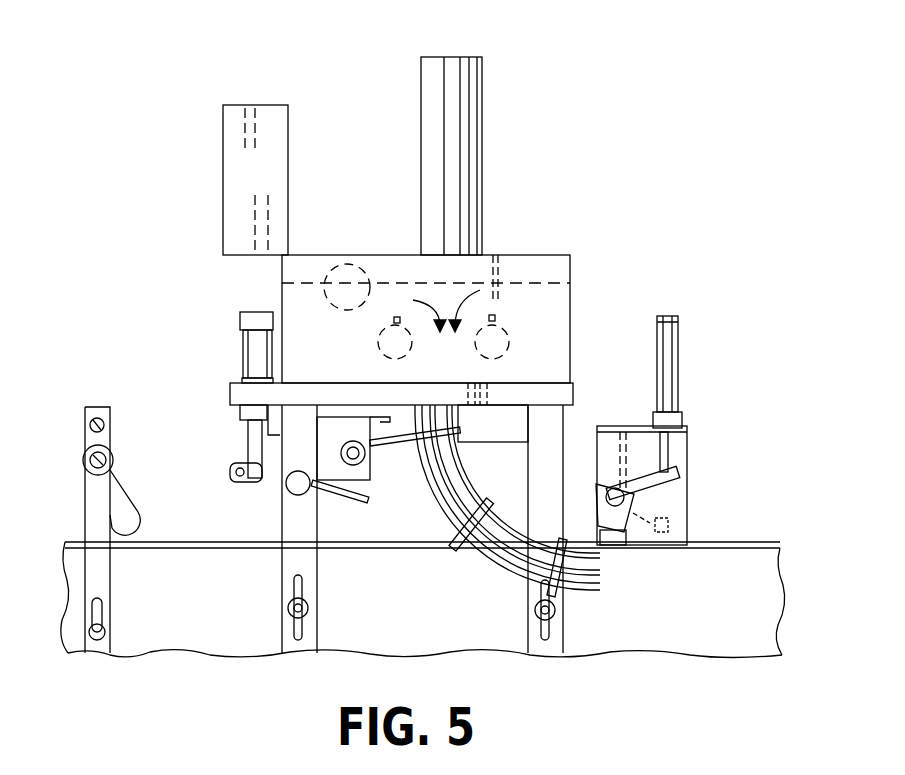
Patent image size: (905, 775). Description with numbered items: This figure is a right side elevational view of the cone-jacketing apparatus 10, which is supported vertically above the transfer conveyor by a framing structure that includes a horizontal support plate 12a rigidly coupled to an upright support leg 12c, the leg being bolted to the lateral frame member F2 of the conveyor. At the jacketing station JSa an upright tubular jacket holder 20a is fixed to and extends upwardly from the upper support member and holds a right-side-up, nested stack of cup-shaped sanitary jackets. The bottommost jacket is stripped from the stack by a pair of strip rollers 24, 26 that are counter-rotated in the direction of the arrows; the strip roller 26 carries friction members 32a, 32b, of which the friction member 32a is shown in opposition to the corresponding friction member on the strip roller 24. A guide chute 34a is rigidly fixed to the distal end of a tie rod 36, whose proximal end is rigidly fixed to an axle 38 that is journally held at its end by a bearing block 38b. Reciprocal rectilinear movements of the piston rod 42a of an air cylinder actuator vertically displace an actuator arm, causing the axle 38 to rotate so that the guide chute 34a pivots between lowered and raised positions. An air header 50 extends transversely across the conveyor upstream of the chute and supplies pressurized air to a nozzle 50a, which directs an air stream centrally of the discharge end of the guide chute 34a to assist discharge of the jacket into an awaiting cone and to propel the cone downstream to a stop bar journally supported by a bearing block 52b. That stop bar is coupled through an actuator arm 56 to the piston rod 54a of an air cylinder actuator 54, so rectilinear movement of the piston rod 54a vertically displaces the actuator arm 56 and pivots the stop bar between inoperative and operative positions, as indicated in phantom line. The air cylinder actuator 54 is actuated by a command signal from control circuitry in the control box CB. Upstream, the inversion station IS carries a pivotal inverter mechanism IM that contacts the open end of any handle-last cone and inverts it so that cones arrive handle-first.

The jacketing apparatus 10 is at (670, 230).
The horizontal support plate 12a is at (555, 387).
The upright support leg 12c is at (566, 417).
The tubular jacket holder 20a is at (453, 172).
The strip roller 24 is at (507, 336).
The strip roller 26 is at (382, 340).
The friction member 32a is at (397, 317).
The friction member 32b is at (493, 316).
The guide chute 34a is at (508, 560).
The tie rod 36 is at (398, 447).
The axle 38 is at (356, 440).
The bearing block 38b is at (347, 441).
The piston rod 42a is at (247, 443).
The air header 50 is at (305, 492).
The nozzle 50a is at (352, 500).
The bearing block 52b is at (607, 487).
The air cylinder actuator 54 is at (678, 350).
The piston rod 54a is at (680, 458).
The actuator arm 56 is at (648, 478).
The control box CB is at (276, 182).
The jacketing station JSa is at (462, 48).
The inversion station IS is at (78, 411).
The inverter mechanism IM is at (122, 507).
The lateral frame member F2 is at (182, 615).